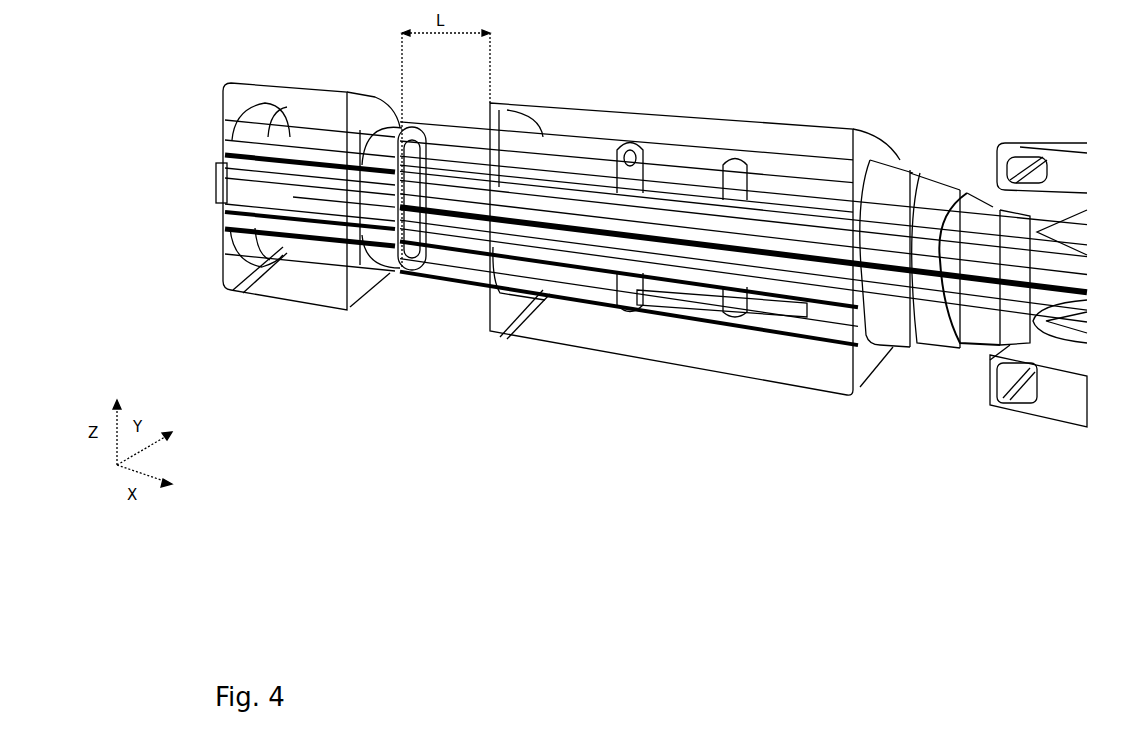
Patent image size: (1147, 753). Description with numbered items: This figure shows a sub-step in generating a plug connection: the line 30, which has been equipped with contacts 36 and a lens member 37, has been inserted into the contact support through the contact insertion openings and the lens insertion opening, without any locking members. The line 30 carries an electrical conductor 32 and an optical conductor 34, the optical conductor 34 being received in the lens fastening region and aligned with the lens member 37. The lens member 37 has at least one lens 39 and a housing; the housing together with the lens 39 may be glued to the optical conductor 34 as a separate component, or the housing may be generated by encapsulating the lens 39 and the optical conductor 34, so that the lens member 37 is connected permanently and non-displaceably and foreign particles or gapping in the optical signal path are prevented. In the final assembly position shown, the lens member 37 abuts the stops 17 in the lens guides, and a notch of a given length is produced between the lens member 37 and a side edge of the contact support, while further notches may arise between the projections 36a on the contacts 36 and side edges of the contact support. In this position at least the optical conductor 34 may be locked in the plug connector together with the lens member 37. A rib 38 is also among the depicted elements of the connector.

The stop 17 is at (222, 160).
The line 30 is at (1060, 170).
The electrical conductor 32 is at (803, 180).
The optical conductor 34 is at (947, 215).
The contact 36 is at (600, 167).
The projection 36a is at (410, 137).
The lens member 37 is at (420, 268).
The rib 38 is at (290, 147).
The lens 39 is at (222, 182).